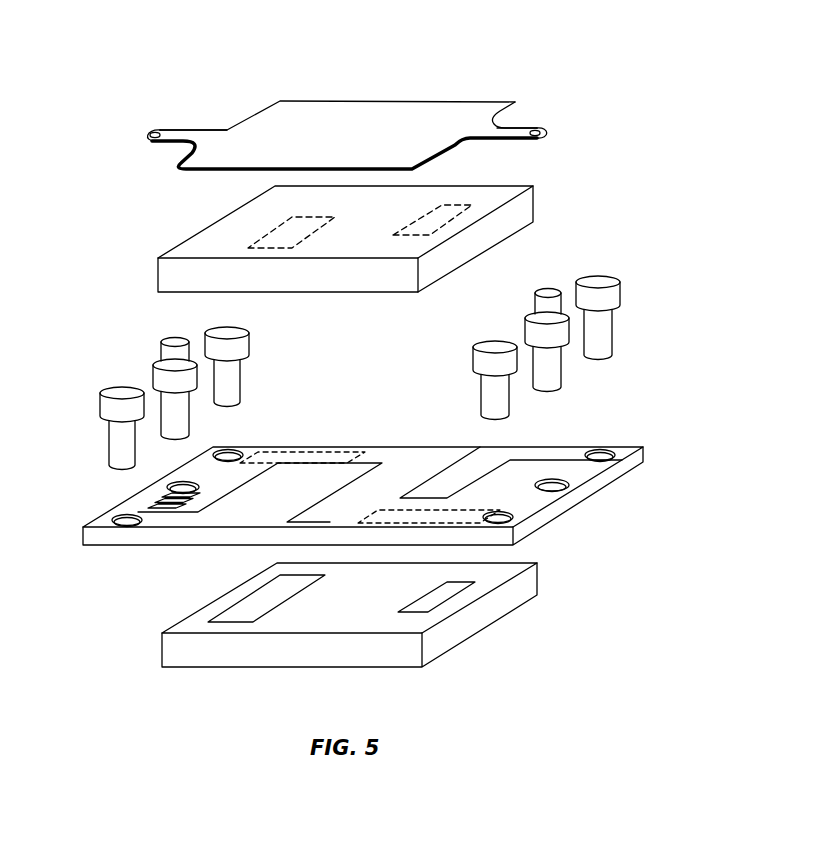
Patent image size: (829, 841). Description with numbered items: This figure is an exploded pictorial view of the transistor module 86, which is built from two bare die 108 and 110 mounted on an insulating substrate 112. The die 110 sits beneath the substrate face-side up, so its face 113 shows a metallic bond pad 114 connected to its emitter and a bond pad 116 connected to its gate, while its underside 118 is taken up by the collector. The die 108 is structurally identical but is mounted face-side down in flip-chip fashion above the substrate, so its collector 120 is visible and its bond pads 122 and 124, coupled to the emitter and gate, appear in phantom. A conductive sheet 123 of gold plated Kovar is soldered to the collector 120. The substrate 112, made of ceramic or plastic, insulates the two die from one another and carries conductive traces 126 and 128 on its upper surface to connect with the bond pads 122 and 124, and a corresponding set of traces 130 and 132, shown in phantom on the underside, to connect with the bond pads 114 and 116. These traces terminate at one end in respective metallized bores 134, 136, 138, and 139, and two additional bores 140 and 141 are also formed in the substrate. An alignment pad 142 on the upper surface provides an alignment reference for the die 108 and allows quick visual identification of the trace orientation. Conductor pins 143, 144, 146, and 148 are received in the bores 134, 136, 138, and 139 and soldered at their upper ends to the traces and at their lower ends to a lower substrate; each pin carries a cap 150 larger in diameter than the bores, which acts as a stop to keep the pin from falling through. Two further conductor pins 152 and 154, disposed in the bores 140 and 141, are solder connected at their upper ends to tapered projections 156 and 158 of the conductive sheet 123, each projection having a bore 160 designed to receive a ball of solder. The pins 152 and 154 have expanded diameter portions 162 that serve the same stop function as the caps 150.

The transistor module 86 is at (247, 77).
The bare die 108 is at (384, 225).
The bare die 110 is at (373, 632).
The substrate 112 is at (376, 496).
The face 113 is at (195, 622).
The bond pad 114 is at (247, 608).
The bond pad 116 is at (413, 612).
The underside 118 is at (203, 668).
The collector 120 is at (462, 193).
The bond pad 122 is at (262, 242).
The conductive sheet 123 is at (344, 119).
The bond pad 124 is at (455, 225).
The conductive trace 126 is at (218, 518).
The conductive trace 128 is at (492, 455).
The conductive trace 130 is at (297, 455).
The conductive trace 132 is at (400, 513).
The bore 134 is at (123, 524).
The bore 136 is at (600, 453).
The bore 138 is at (236, 452).
The bore 139 is at (515, 521).
The bore 140 is at (168, 488).
The bore 141 is at (567, 488).
The alignment pad 142 is at (143, 503).
The conductor pin 143 is at (115, 445).
The conductor pin 144 is at (478, 340).
The conductor pin 146 is at (242, 383).
The conductor pin 148 is at (628, 307).
The cap 150 is at (608, 280).
The conductor pin 152 is at (144, 377).
The conductor pin 154 is at (555, 287).
The tapered projection 156 is at (188, 128).
The tapered projection 158 is at (503, 132).
The bore 160 is at (140, 147).
The expanded diameter portion 162 is at (155, 372).